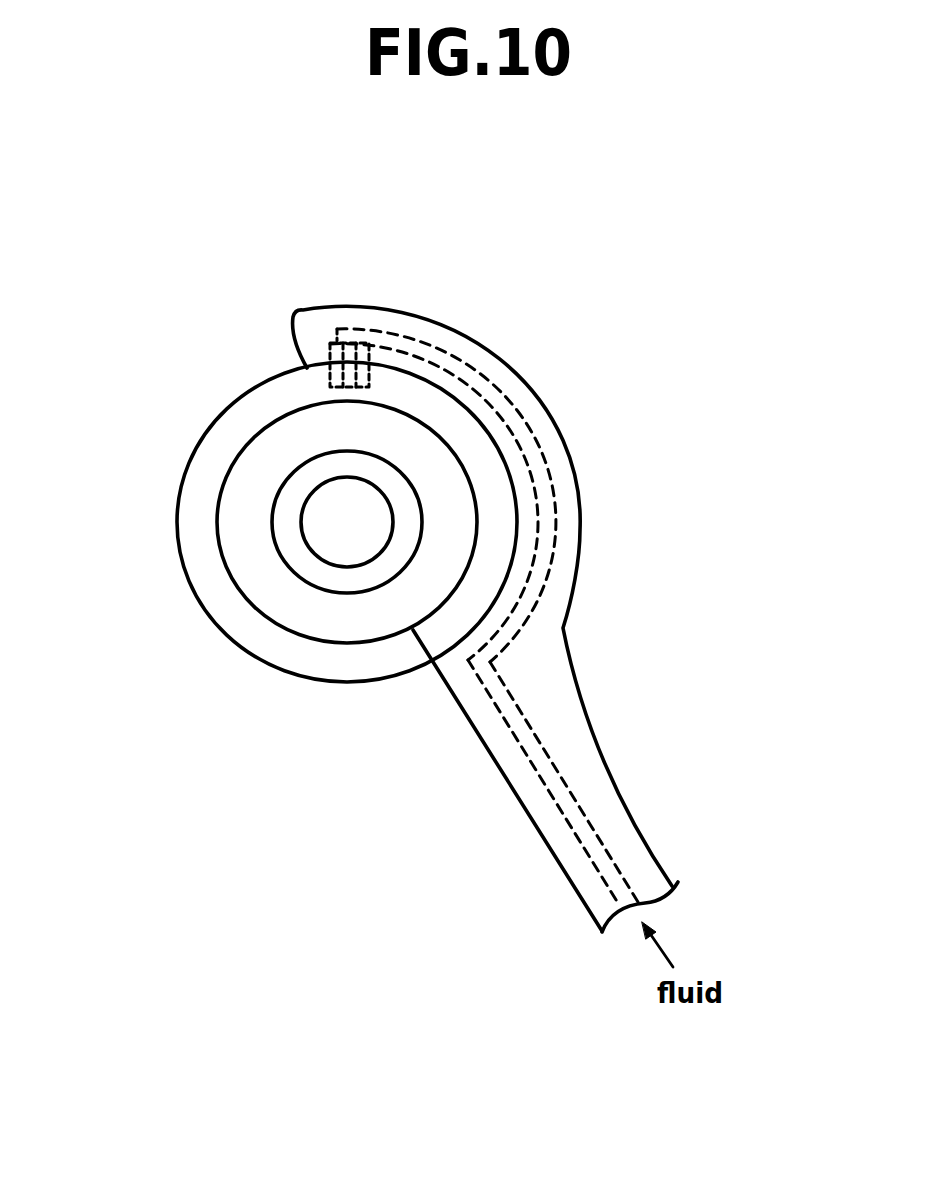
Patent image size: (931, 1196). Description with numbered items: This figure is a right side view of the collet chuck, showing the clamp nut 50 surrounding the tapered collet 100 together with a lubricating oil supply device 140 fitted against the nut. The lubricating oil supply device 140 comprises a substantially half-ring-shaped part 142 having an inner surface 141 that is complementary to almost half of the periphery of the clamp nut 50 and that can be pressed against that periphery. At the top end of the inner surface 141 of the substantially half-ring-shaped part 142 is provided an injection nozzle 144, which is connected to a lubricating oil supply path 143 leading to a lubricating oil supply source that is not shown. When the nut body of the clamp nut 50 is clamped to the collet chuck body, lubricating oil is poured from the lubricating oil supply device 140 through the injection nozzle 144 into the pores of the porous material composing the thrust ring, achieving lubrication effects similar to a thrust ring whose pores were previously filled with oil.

The clamp nut 50 is at (262, 640).
The tapered collet 100 is at (285, 542).
The lubricating oil supply device 140 is at (582, 587).
The inner surface 141 is at (445, 389).
The substantially half-ring-shaped part 142 is at (552, 440).
The lubricating oil supply path 143 is at (527, 755).
The injection nozzle 144 is at (333, 358).